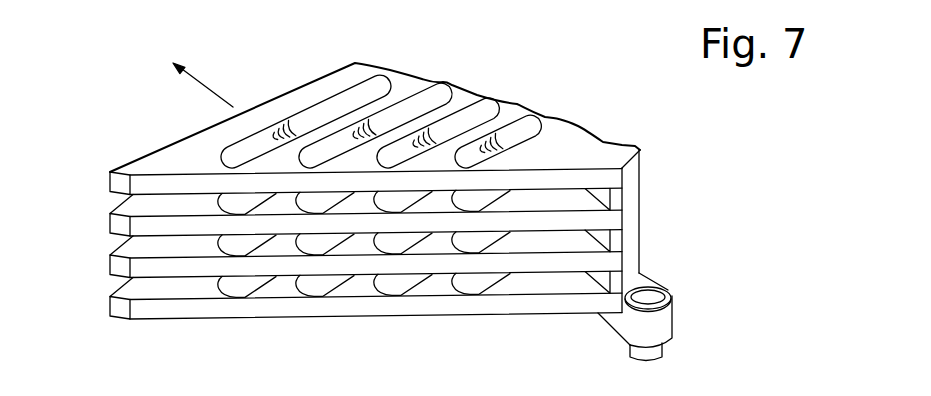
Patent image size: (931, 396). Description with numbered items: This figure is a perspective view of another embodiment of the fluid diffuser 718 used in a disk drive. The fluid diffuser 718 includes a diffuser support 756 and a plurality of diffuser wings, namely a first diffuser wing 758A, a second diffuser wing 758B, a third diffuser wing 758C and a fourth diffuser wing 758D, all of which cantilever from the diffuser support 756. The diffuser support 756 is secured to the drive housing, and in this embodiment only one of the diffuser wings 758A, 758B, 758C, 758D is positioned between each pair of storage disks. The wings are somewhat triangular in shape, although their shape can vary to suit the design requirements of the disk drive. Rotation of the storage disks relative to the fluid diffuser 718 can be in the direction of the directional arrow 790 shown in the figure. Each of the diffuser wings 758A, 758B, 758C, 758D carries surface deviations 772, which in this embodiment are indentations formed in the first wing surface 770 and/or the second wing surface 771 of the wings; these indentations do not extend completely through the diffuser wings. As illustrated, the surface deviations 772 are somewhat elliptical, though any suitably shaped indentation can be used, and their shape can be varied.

The fluid diffuser 718 is at (687, 252).
The diffuser support 756 is at (631, 193).
The first diffuser wing 758A is at (118, 183).
The second diffuser wing 758B is at (118, 224).
The third diffuser wing 758C is at (118, 266).
The fourth diffuser wing 758D is at (118, 308).
The first wing surface 770 is at (603, 148).
The second wing surface 771 is at (437, 320).
The surface deviations 772 is at (510, 141).
The directional arrow 790 is at (212, 90).